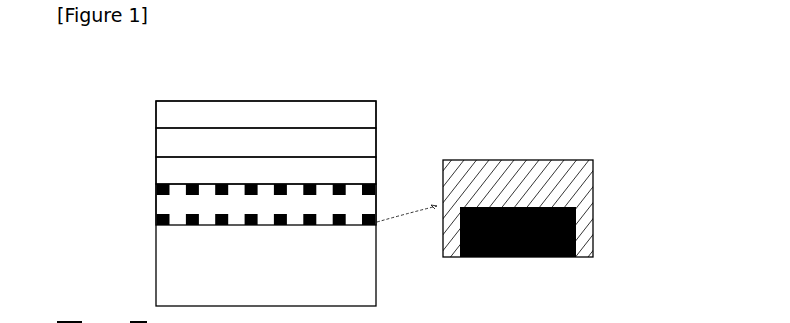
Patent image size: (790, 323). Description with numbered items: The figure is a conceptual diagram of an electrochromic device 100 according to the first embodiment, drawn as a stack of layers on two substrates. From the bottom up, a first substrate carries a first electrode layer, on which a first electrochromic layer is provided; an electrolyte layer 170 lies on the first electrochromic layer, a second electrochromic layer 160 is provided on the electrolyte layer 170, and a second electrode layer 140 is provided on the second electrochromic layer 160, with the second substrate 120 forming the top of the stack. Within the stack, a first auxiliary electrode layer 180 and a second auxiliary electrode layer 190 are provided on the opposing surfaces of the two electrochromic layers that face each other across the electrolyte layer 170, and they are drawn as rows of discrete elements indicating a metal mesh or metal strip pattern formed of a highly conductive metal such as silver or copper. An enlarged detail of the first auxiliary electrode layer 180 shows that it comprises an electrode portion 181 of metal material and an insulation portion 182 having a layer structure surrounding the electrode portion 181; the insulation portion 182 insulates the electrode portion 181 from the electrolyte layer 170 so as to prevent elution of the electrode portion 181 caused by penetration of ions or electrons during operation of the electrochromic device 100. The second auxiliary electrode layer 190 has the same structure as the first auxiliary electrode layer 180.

The electrochromic device 100 is at (99, 80).
The second substrate 120 is at (377, 113).
The second electrode layer 140 is at (377, 140).
The second electrochromic layer 160 is at (377, 167).
The electrolyte layer 170 is at (156, 207).
The first auxiliary electrode layer 180 is at (192, 225).
The electrode portion 181 is at (515, 258).
The insulation portion 182 is at (594, 171).
The second auxiliary electrode layer 190 is at (192, 183).